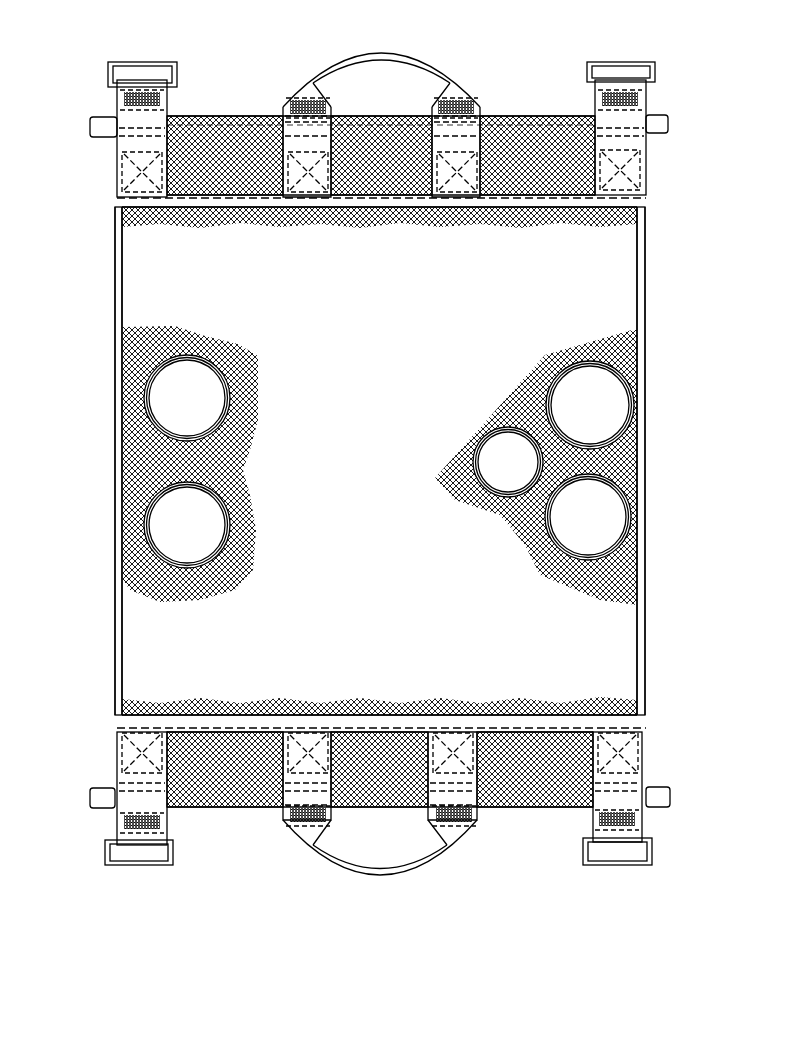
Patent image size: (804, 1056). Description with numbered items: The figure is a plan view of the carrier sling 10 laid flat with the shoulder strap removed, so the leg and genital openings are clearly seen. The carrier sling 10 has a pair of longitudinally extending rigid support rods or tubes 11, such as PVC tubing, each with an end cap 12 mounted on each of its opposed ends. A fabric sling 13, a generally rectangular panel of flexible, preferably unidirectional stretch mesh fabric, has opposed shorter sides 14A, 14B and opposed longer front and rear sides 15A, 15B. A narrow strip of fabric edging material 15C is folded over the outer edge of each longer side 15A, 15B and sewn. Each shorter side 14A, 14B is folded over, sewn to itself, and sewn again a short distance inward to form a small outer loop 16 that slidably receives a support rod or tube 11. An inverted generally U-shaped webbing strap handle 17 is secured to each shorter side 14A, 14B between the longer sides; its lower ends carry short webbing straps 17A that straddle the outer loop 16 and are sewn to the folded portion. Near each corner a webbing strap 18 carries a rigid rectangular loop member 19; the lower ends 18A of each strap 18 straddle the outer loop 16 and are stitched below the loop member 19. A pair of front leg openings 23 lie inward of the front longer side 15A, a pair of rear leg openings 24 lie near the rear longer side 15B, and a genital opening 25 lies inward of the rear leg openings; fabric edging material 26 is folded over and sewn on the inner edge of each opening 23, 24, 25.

The carrier sling 10 is at (523, 46).
The support rod or tube 11 is at (217, 116).
The end cap 12 is at (96, 137).
The fabric sling 13 is at (370, 401).
The shorter side 14A is at (525, 116).
The shorter side 14B is at (233, 808).
The front longer side 15A is at (115, 602).
The rear longer side 15B is at (648, 586).
The fabric edging material 15C is at (115, 654).
The outer loop 16 is at (255, 116).
The webbing strap handle 17 is at (376, 53).
The short webbing strap 17A is at (307, 192).
The webbing strap 18 is at (117, 100).
The lower end of strap 18A is at (143, 192).
The rectangular loop member 19 is at (138, 62).
The front leg opening 23 is at (197, 409).
The rear leg opening 24 is at (600, 416).
The genital opening 25 is at (518, 473).
The fabric edging material 26 is at (208, 375).